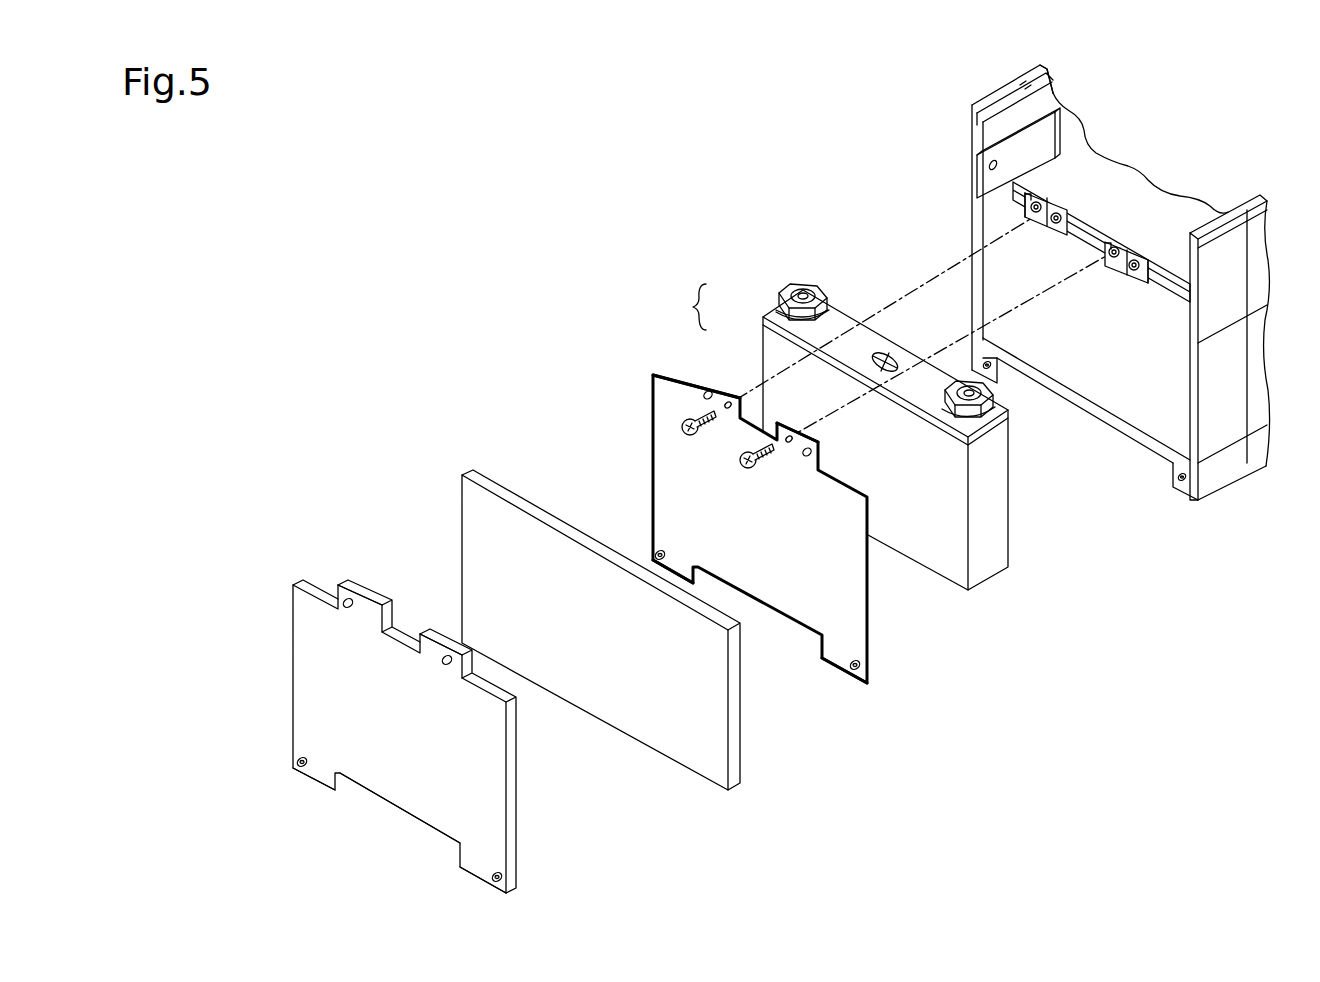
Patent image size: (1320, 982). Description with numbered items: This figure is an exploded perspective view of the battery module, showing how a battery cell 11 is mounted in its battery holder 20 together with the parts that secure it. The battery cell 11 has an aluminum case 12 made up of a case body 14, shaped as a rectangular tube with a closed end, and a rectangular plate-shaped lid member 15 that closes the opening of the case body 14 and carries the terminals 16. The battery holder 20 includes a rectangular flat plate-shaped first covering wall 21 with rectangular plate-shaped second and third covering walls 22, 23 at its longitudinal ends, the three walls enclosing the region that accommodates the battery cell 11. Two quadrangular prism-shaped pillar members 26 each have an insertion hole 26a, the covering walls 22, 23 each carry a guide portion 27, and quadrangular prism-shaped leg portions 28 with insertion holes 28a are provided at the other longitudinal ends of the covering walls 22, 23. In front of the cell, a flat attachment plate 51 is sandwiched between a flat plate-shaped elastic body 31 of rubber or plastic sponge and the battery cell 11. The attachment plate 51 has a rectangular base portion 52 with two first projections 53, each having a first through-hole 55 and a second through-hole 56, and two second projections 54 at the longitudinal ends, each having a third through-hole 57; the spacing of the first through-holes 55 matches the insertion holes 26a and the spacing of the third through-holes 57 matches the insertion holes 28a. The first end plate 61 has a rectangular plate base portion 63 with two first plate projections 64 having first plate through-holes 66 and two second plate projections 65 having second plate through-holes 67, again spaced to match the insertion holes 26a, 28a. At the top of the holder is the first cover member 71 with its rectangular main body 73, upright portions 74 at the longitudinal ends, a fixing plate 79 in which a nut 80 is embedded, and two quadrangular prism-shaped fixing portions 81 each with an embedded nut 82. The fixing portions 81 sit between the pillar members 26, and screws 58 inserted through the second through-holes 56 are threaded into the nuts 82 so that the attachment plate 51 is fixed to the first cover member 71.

The battery cell 11 is at (991, 580).
The case 12 is at (685, 307).
The case body 14 is at (763, 326).
The lid member 15 is at (778, 305).
The terminals 16 is at (805, 286).
The battery holder 20 is at (1099, 287).
The first covering wall 21 is at (1094, 412).
The second covering wall 22 is at (1188, 346).
The third covering wall 23 is at (975, 216).
The pillar members 26 is at (1053, 244).
The insertion hole 26a is at (1024, 212).
The guide portion 27 is at (1025, 77).
The leg portions 28 is at (1005, 375).
The insertion hole 28a is at (985, 360).
The elastic body 31 is at (745, 767).
The attachment plate 51 is at (870, 650).
The base portion 52 is at (782, 598).
The first projections 53 is at (705, 383).
The second projections 54 is at (672, 578).
The first through-hole 55 is at (703, 398).
The second through-hole 56 is at (728, 410).
The third through-hole 57 is at (662, 550).
The screws 58 is at (690, 436).
The first end plate 61 is at (518, 873).
The plate base portion 63 is at (387, 797).
The first plate projections 64 is at (365, 602).
The second plate projections 65 is at (318, 784).
The first plate through-hole 66 is at (345, 610).
The second plate through-hole 67 is at (306, 760).
The first cover member 71 is at (985, 94).
The main body 73 is at (1133, 168).
The upright portions 74 is at (1052, 88).
The fixing plate 79 is at (1062, 133).
The nut 80 is at (980, 171).
The fixing portions 81 is at (1057, 224).
The nut 82 is at (1060, 213).